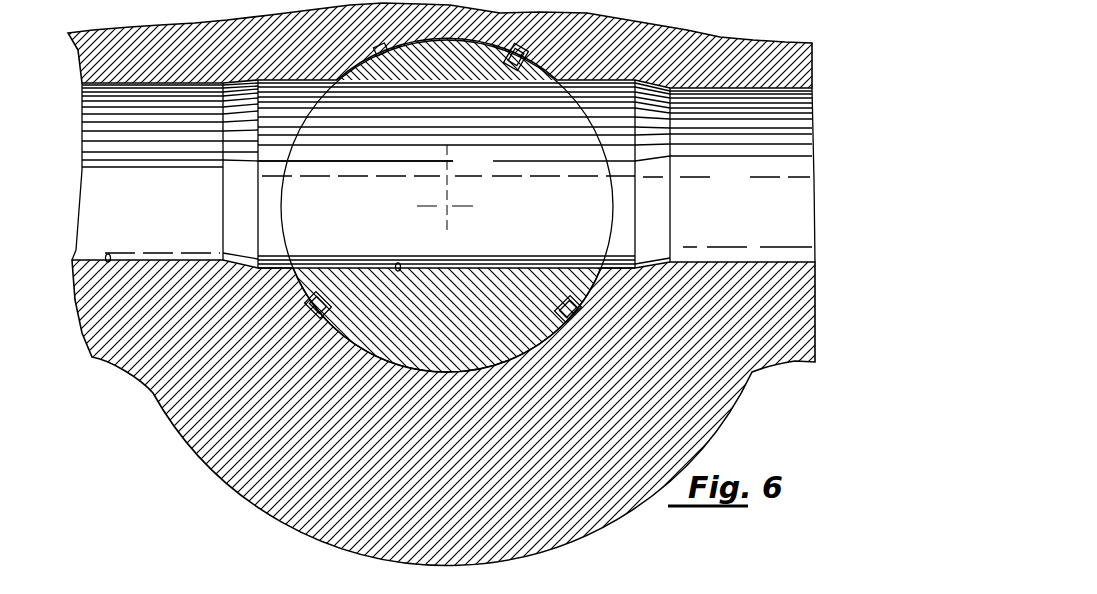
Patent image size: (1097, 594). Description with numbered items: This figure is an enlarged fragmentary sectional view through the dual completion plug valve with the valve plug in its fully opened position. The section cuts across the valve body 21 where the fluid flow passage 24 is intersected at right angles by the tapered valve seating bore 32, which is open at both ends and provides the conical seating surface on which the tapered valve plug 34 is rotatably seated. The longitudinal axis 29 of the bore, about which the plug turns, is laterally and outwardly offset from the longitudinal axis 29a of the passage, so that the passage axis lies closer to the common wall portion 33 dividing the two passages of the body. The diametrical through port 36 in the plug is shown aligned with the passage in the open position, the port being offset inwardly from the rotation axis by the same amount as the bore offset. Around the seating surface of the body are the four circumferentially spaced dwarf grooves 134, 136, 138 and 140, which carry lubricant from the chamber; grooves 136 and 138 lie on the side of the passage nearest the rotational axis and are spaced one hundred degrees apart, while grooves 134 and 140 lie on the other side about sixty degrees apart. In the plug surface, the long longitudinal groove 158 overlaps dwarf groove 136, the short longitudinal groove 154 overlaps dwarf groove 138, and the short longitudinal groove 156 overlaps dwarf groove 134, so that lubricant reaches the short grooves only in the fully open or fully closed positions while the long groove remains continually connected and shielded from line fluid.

The valve body 21 is at (797, 364).
The fluid flow passage 24 is at (108, 263).
The longitudinal axis of bore 29 is at (448, 207).
The longitudinal axis of fluid flow passage 29a is at (458, 176).
The tapered valve seating bore 32 is at (425, 53).
The common wall portion 33 is at (704, 43).
The tapered valve plug 34 is at (507, 272).
The diametrical through port 36 is at (398, 272).
The dwarf groove 134 is at (521, 45).
The dwarf groove 136 is at (580, 309).
The dwarf groove 138 is at (312, 316).
The dwarf groove 140 is at (381, 44).
The short longitudinal groove 154 is at (326, 298).
The short longitudinal groove 156 is at (506, 59).
The long longitudinal groove 158 is at (566, 293).